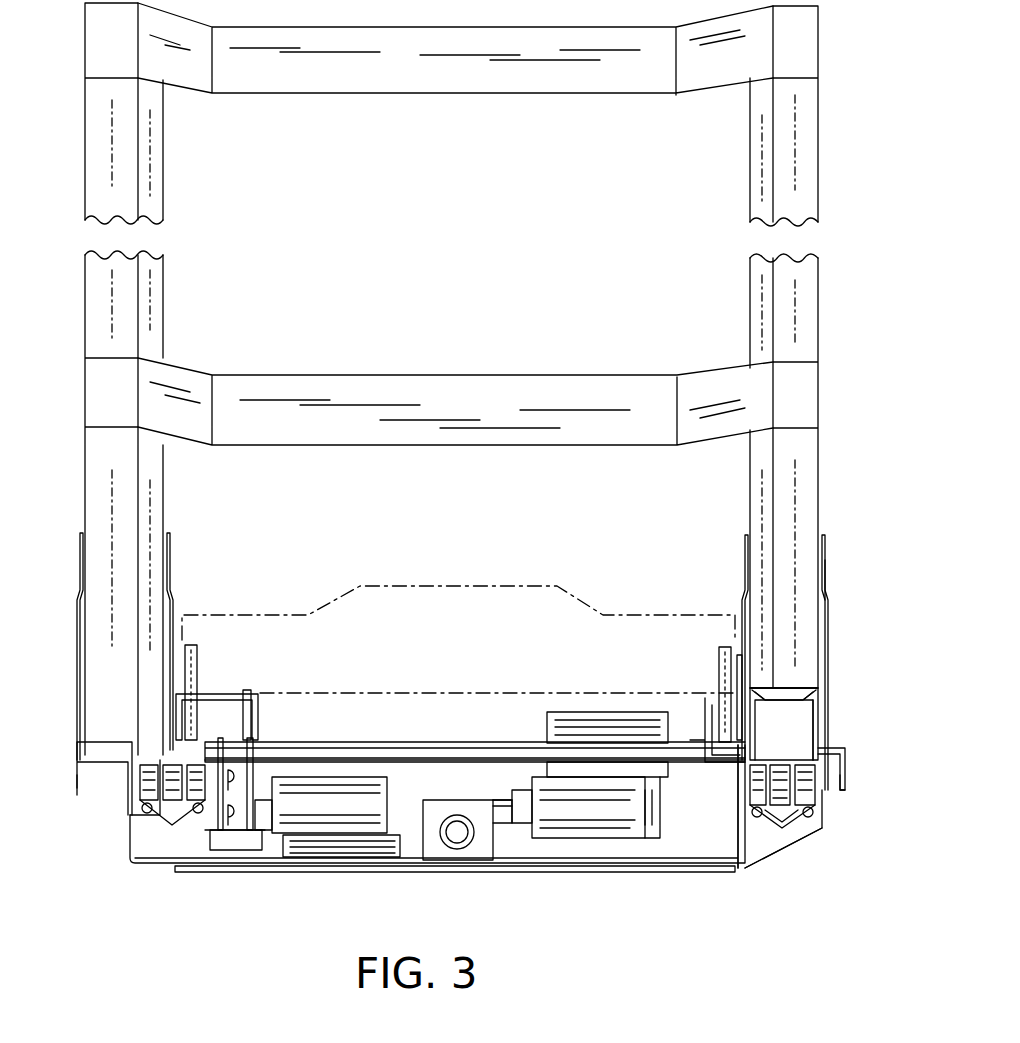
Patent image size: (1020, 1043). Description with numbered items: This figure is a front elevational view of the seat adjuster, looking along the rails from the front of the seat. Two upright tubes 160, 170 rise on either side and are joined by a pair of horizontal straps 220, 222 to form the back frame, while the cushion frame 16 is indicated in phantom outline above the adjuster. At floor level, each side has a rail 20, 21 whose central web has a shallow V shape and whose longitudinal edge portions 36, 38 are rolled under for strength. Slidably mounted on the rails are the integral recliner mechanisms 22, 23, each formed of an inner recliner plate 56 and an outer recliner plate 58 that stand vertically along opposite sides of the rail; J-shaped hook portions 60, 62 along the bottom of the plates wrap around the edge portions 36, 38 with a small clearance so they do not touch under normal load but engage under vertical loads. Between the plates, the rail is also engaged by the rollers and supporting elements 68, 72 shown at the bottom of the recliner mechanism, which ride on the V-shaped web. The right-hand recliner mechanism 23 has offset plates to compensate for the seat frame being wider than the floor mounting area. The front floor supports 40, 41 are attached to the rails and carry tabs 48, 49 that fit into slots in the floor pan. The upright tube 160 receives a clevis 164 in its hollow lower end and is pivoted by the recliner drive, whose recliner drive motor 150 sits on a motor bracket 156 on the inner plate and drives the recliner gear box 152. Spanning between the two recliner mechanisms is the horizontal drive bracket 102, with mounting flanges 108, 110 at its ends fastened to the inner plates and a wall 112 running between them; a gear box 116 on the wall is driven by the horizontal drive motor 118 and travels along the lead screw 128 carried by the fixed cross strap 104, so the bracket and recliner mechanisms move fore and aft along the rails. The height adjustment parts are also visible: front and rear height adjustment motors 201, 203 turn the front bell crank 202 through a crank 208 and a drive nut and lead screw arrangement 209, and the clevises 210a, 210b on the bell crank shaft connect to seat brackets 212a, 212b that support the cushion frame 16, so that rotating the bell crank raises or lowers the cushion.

The cushion frame 16 is at (575, 585).
The rail 20 is at (775, 815).
The rail 21 is at (130, 825).
The integral recliner mechanism 22 is at (832, 618).
The integral recliner mechanism 23 is at (75, 620).
The longitudinal edge portion 36 is at (770, 808).
The longitudinal edge portion 38 is at (778, 835).
The front floor support 40 is at (845, 748).
The front floor support 41 is at (77, 750).
The tab 48 is at (845, 778).
The tab 49 is at (77, 780).
The inner recliner plate 56 is at (748, 560).
The outer recliner plate 58 is at (828, 575).
The J-shaped hook portion 60 is at (760, 820).
The J-shaped hook portion 62 is at (800, 820).
The center roller 68 is at (790, 768).
The roller axle 72 is at (800, 830).
The horizontal drive bracket 102 is at (575, 860).
The fixed cross strap 104 is at (610, 870).
The mounting flange 108 is at (222, 855).
The mounting flange 110 is at (738, 805).
The wall 112 is at (645, 838).
The gear box 116 is at (470, 860).
The horizontal drive motor 118 is at (545, 840).
The lead screw 128 is at (450, 838).
The recliner drive motor 150 is at (565, 700).
The recliner gear box 152 is at (785, 705).
The motor bracket 156 is at (822, 718).
The upright tube 160 is at (750, 165).
The clevis 164 is at (815, 700).
The upright tube 170 is at (163, 318).
The front height adjustment motor 201 is at (475, 776).
The front bell crank 202 is at (395, 742).
The rear height adjustment motor 203 is at (360, 857).
The crank 208 is at (329, 805).
The drive nut and lead screw arrangement 209 is at (218, 800).
The clevis 210a is at (165, 715).
The clevis 210b is at (705, 725).
The seat bracket 212a is at (197, 662).
The seat bracket 212b is at (722, 665).
The horizontal strap 220 is at (420, 95).
The horizontal strap 222 is at (432, 375).